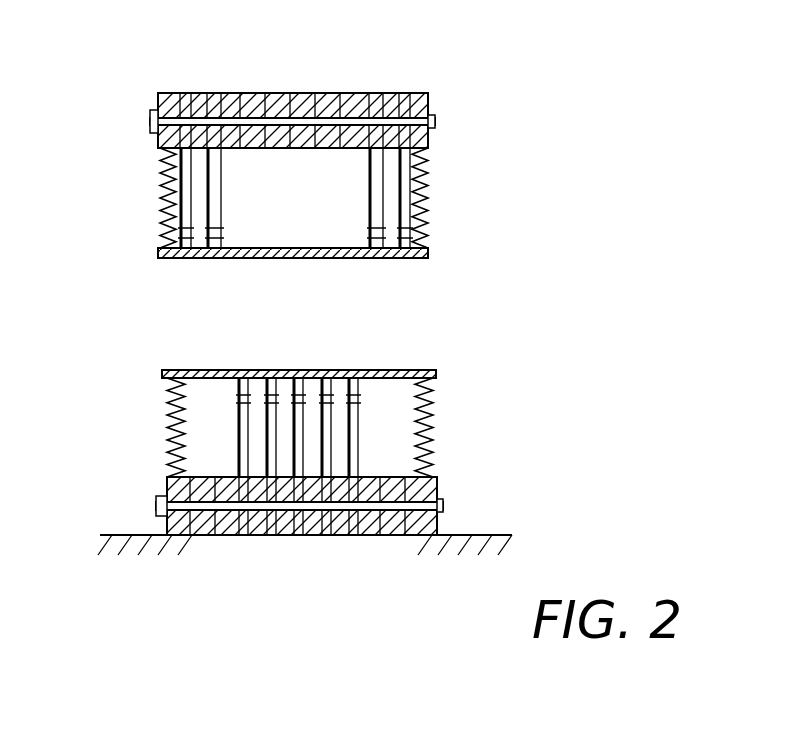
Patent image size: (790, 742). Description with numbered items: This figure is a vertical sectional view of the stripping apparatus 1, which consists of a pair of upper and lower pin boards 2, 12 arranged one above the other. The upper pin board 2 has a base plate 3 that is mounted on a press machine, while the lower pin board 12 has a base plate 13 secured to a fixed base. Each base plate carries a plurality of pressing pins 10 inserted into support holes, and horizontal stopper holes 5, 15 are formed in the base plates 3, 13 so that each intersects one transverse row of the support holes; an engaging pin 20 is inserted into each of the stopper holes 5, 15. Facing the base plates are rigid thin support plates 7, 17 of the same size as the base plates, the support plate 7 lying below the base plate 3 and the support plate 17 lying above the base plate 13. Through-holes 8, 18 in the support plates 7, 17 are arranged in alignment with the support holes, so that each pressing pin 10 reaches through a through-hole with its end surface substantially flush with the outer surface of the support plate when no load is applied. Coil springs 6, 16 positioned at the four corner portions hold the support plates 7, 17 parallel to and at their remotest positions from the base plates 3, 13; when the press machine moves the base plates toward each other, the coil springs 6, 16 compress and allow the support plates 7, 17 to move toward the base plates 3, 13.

The stripping apparatus 1 is at (607, 225).
The upper pin board 2 is at (346, 194).
The base plate 3 is at (430, 100).
The stopper holes 5 is at (428, 135).
The coil springs 6 is at (168, 190).
The support plate 7 is at (430, 252).
The through-holes 8 is at (294, 258).
The pressing pins 10 is at (180, 215).
The lower pin board 12 is at (318, 322).
The base plate 13 is at (425, 518).
The stopper holes 15 is at (440, 505).
The coil springs 16 is at (170, 420).
The support plate 17 is at (435, 370).
The through-holes 18 is at (186, 368).
The engaging pin 20 is at (150, 120).